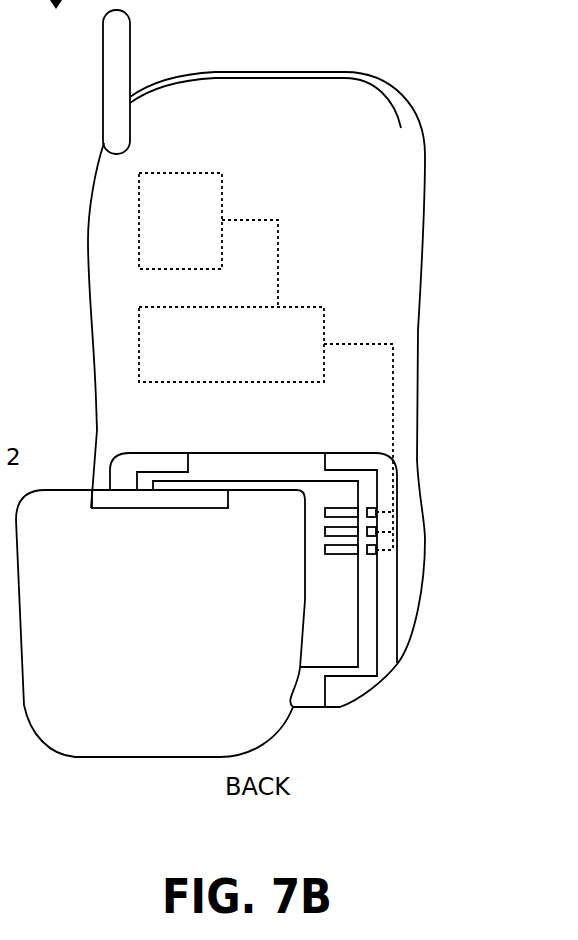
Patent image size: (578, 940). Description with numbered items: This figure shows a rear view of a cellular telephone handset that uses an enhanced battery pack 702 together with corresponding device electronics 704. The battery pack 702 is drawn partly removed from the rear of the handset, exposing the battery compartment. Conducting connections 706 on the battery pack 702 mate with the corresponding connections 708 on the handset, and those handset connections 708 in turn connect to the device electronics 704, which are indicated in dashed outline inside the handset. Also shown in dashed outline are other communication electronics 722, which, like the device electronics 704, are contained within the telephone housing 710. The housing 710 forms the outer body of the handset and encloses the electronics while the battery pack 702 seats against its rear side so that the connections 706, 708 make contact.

The enhanced battery pack 702 is at (345, 660).
The device electronics 704 is at (300, 307).
The conducting connections 706 is at (352, 508).
The corresponding connections 708 is at (373, 553).
The telephone housing 710 is at (212, 389).
The communication electronics 722 is at (181, 174).